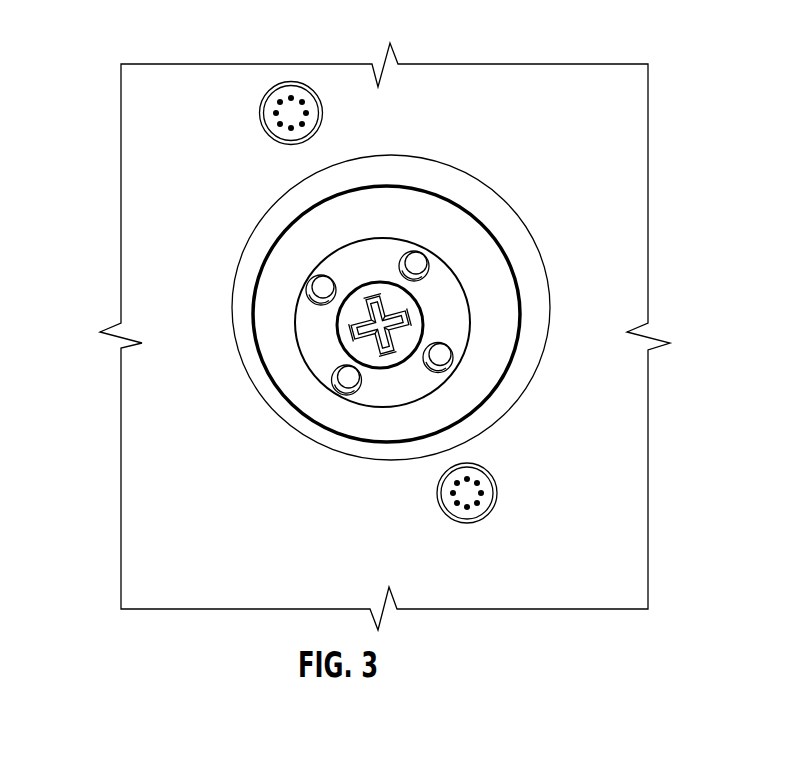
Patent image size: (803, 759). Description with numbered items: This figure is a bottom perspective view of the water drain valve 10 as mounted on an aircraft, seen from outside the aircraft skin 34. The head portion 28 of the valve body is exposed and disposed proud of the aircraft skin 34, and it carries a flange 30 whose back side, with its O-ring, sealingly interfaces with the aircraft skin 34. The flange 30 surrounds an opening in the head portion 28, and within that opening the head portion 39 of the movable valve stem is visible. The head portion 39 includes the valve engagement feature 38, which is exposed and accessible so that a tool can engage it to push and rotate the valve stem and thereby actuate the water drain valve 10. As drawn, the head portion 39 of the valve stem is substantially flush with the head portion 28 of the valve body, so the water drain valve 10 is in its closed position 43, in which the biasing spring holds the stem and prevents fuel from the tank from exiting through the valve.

The water drain valve 10 is at (460, 204).
The head portion 28 is at (290, 315).
The flange 30 is at (383, 200).
The aircraft skin 34 is at (572, 456).
The valve engagement feature 38 is at (400, 313).
The head portion 39 is at (336, 335).
The closed position 43 is at (324, 380).